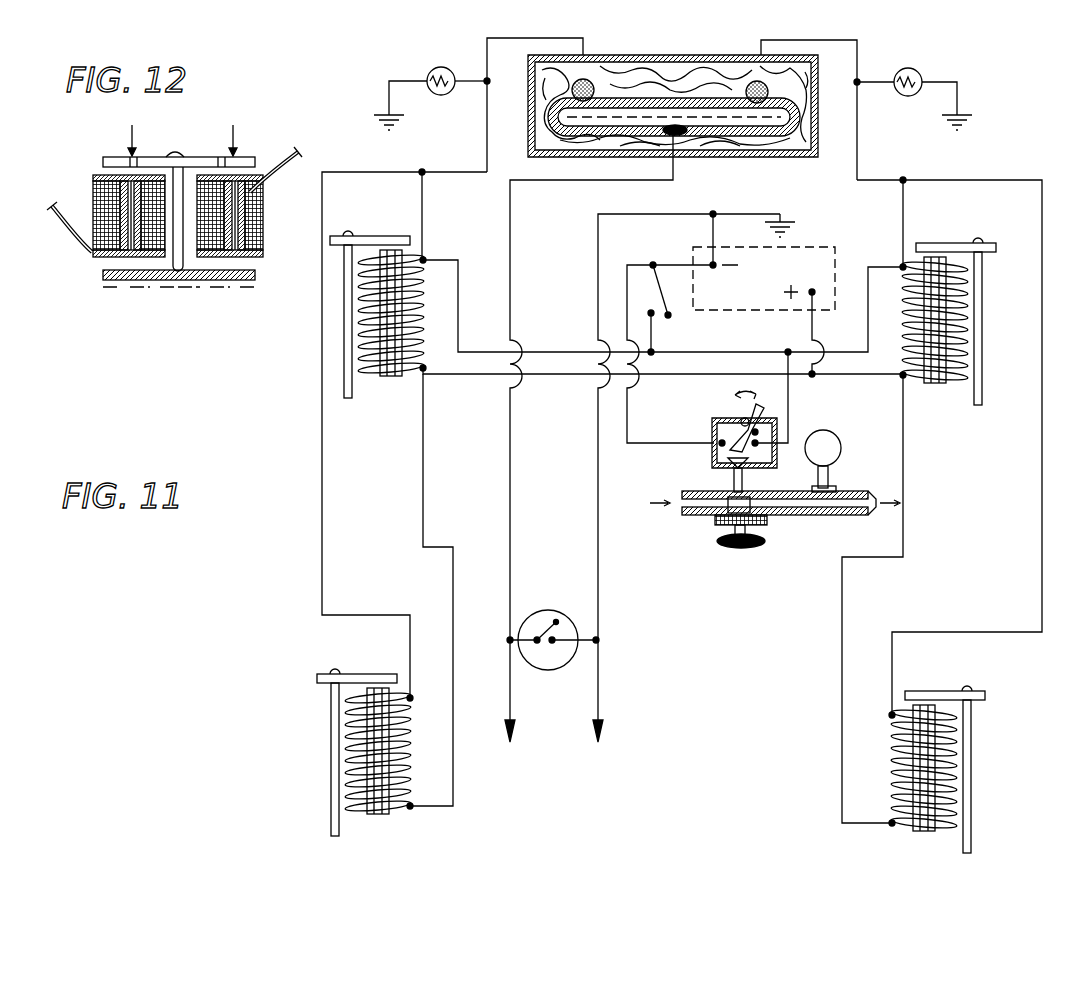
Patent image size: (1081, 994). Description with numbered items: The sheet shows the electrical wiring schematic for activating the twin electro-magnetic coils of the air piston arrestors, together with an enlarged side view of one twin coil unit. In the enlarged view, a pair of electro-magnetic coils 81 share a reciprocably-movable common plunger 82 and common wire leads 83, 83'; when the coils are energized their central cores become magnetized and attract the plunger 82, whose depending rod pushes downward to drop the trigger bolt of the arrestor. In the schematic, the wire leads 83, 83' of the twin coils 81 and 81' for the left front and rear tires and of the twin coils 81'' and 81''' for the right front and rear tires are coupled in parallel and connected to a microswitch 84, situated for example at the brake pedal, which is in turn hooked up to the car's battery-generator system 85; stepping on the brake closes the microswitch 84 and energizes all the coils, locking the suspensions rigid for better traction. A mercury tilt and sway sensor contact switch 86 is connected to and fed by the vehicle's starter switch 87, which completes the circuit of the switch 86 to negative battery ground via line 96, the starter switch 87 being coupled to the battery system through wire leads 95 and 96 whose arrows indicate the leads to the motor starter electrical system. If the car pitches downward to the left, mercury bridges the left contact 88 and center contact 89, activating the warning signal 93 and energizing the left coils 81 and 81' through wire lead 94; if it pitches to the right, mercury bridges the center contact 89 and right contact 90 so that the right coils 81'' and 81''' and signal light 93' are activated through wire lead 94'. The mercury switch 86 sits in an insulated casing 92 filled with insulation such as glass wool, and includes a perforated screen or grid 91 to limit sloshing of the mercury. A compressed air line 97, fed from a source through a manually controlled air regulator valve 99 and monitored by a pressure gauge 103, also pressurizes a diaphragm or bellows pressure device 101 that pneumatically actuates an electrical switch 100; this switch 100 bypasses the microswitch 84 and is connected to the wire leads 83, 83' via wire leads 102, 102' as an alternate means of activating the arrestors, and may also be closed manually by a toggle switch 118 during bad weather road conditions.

In FIG. 12, the electro-magnetic coil 81 is at (173, 236).
In FIG. 11, the electro-magnetic coil 81 is at (378, 327).
In FIG. 11, the electro-magnetic coil 81' is at (377, 755).
In FIG. 11, the electro-magnetic coil 81'' is at (948, 330).
In FIG. 11, the electro-magnetic coil 81''' is at (934, 771).
In FIG. 12, the common plunger 82 is at (216, 157).
In FIG. 11, the common plunger 82 is at (348, 398).
In FIG. 12, the wire lead 83 is at (276, 153).
In FIG. 11, the wire lead 83 is at (679, 442).
In FIG. 12, the wire lead 83' is at (58, 227).
In FIG. 11, the wire lead 83' is at (663, 595).
In FIG. 11, the microswitch 84 is at (676, 297).
In FIG. 11, the battery-generator system 85 is at (834, 247).
In FIG. 11, the mercury tilt and sway sensor contact switch 86 is at (684, 97).
In FIG. 11, the starter switch 87 is at (550, 670).
In FIG. 11, the left contact 88 is at (586, 84).
In FIG. 11, the center contact 89 is at (682, 137).
In FIG. 11, the right contact 90 is at (756, 86).
In FIG. 11, the perforated screen or grid 91 is at (770, 112).
In FIG. 11, the insulated casing 92 is at (810, 152).
In FIG. 11, the warning signal 93 is at (432, 82).
In FIG. 11, the signal light 93' is at (913, 82).
In FIG. 11, the wire lead 94 is at (535, 87).
In FIG. 11, the wire lead 94' is at (809, 91).
In FIG. 11, the wire lead 95 is at (510, 506).
In FIG. 11, the wire lead 96 is at (598, 546).
In FIG. 11, the compressed air line 97 is at (860, 512).
In FIG. 11, the air regulator valve 99 is at (783, 532).
In FIG. 11, the electrical switch 100 is at (718, 428).
In FIG. 11, the diaphragm or bellows pressure device 101 is at (730, 462).
In FIG. 11, the wire lead 102 is at (680, 460).
In FIG. 11, the wire lead 102' is at (790, 419).
In FIG. 11, the pressure gauge 103 is at (824, 430).
In FIG. 11, the toggle switch 118 is at (767, 422).